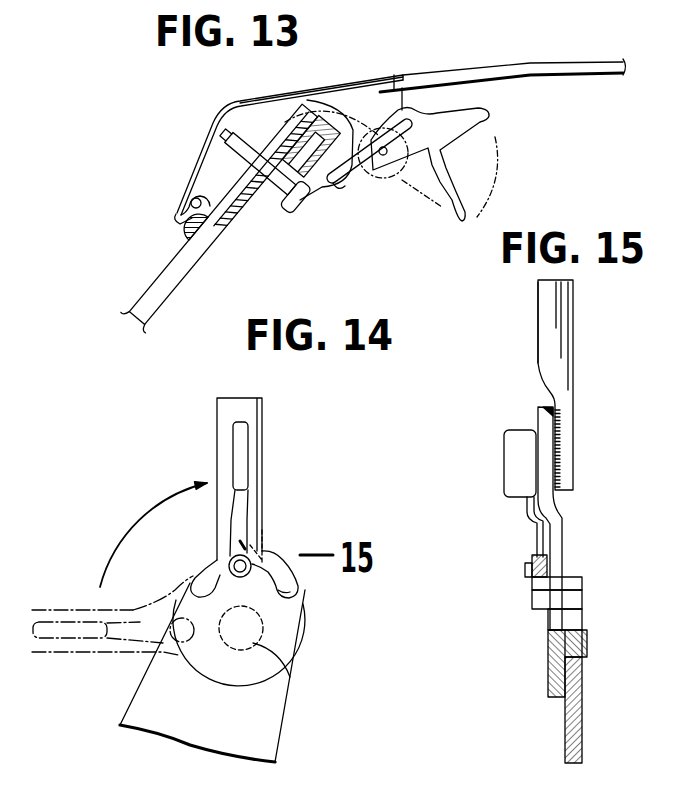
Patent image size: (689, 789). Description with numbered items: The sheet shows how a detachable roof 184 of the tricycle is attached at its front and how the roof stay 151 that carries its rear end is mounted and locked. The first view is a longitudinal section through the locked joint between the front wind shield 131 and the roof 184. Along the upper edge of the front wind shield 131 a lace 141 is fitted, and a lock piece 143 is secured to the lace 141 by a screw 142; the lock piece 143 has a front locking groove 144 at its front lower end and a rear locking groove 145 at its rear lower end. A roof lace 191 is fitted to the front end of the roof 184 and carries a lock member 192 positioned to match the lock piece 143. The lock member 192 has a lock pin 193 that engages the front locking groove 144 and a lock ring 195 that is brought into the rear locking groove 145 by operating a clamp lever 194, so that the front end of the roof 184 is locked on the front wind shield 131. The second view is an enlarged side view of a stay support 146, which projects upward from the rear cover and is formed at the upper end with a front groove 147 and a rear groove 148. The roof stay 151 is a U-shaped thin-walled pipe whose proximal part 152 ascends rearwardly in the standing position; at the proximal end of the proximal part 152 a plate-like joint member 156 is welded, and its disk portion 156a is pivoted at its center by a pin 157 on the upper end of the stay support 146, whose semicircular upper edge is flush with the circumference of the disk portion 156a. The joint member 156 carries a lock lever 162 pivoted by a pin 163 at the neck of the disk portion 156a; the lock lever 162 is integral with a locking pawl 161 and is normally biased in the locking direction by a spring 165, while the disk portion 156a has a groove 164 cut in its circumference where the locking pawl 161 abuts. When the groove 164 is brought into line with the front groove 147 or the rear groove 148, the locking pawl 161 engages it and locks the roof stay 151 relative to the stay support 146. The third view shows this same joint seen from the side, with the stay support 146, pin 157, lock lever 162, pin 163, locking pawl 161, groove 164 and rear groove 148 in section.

In FIG. 13, the front wind shield 131 is at (143, 298).
In FIG. 13, the lace 141 is at (187, 237).
In FIG. 13, the screw 142 is at (302, 207).
In FIG. 13, the lock piece 143 is at (207, 167).
In FIG. 13, the front locking groove 144 is at (185, 206).
In FIG. 13, the rear locking groove 145 is at (338, 192).
In FIG. 14, the stay support 146 is at (287, 737).
In FIG. 15, the stay support 146 is at (584, 732).
In FIG. 14, the front groove 147 is at (205, 572).
In FIG. 14, the rear groove 148 is at (300, 590).
In FIG. 15, the rear groove 148 is at (583, 587).
In FIG. 14, the roof stay 151 is at (262, 398).
In FIG. 15, the roof stay 151 is at (574, 358).
In FIG. 15, the proximal part 152 is at (545, 337).
In FIG. 14, the joint member 156 is at (266, 490).
In FIG. 15, the joint member 156 is at (567, 525).
In FIG. 14, the disk portion 156a is at (278, 650).
In FIG. 14, the pin 157 is at (297, 703).
In FIG. 15, the pin 157 is at (588, 645).
In FIG. 14, the locking pawl 161 is at (303, 640).
In FIG. 15, the locking pawl 161 is at (532, 598).
In FIG. 14, the lock lever 162 is at (250, 438).
In FIG. 15, the lock lever 162 is at (513, 465).
In FIG. 14, the pin 163 is at (232, 562).
In FIG. 15, the pin 163 is at (528, 570).
In FIG. 14, the groove 164 is at (284, 591).
In FIG. 15, the groove 164 is at (553, 603).
In FIG. 14, the spring 165 is at (266, 528).
In FIG. 13, the roof 184 is at (530, 63).
In FIG. 13, the roof lace 191 is at (396, 84).
In FIG. 13, the lock member 192 is at (358, 96).
In FIG. 13, the lock pin 193 is at (172, 212).
In FIG. 13, the clamp lever 194 is at (460, 107).
In FIG. 13, the lock ring 195 is at (362, 162).